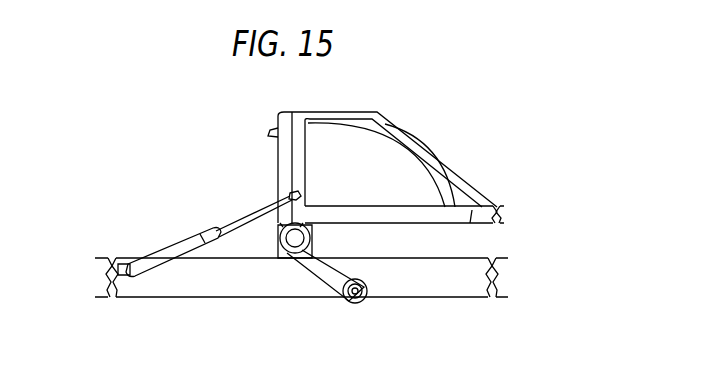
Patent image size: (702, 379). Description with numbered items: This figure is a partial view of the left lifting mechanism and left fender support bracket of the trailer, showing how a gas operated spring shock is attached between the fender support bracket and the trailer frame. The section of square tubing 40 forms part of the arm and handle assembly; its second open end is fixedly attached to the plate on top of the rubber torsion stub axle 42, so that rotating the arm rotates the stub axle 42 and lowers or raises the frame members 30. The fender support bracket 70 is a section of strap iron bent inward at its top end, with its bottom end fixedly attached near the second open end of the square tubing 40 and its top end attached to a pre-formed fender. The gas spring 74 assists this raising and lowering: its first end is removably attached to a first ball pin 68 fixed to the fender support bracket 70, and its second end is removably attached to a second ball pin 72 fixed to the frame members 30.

The frame members 30 is at (447, 287).
The square tubing 40 is at (474, 213).
The fender support bracket 70 is at (283, 138).
The first ball pin 68 is at (288, 191).
The gas spring 74 is at (170, 240).
The second ball pin 72 is at (130, 276).
The rubber torsion stub axle 42 is at (330, 262).